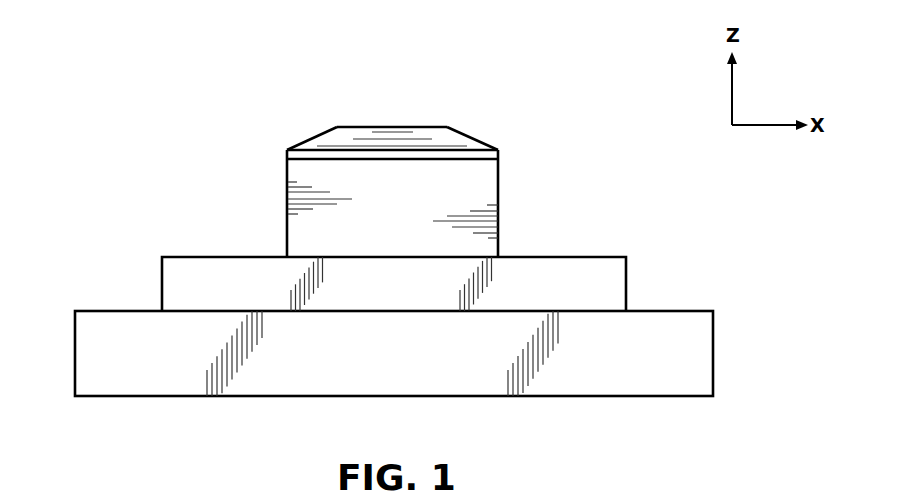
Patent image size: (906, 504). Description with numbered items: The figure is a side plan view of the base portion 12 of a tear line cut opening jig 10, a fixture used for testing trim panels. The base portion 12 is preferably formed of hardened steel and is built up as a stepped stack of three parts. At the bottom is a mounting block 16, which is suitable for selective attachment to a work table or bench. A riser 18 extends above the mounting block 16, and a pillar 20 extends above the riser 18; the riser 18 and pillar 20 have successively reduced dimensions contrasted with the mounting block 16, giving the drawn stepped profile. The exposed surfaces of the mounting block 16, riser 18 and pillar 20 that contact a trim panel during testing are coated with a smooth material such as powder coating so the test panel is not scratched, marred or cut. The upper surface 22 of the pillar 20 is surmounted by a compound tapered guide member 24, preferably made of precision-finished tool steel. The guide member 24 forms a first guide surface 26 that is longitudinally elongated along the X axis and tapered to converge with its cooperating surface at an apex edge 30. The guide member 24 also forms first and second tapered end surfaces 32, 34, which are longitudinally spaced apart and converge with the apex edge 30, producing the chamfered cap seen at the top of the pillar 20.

The tear line cut opening jig 10 is at (306, 82).
The base portion 12 is at (722, 357).
The mounting block 16 is at (130, 378).
The riser 18 is at (183, 293).
The pillar 20 is at (486, 183).
The upper surface 22 is at (307, 160).
The compound tapered guide member 24 is at (425, 116).
The first guide surface 26 is at (347, 135).
The apex edge 30 is at (395, 125).
The first tapered end surface 32 is at (312, 137).
The second tapered end surface 34 is at (470, 133).